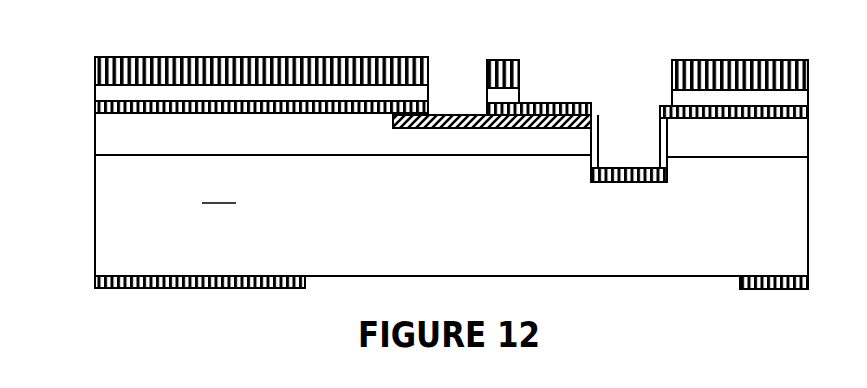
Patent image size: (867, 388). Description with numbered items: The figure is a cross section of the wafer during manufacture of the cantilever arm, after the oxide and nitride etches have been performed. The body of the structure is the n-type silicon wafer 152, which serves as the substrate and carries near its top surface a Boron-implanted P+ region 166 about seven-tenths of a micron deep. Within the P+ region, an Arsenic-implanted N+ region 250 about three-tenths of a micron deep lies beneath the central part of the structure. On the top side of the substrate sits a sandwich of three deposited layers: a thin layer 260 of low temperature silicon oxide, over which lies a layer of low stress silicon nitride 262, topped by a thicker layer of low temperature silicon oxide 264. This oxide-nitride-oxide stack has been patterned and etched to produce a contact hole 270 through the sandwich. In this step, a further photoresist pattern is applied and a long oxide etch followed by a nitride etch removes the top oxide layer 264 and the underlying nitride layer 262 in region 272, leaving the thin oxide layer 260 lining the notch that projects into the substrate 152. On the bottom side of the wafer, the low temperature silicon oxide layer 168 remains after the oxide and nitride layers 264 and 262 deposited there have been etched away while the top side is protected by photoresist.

The silicon wafer 152 is at (451, 166).
The P+ region 166 is at (105, 132).
The low temperature silicon oxide layer 168 is at (95, 280).
The N+ region 250 is at (518, 128).
The low temperature silicon oxide layer 260 is at (95, 112).
The low stress silicon nitride layer 262 is at (428, 101).
The low temperature silicon oxide layer 264 is at (95, 68).
The contact hole 270 is at (468, 88).
The region 272 is at (592, 88).